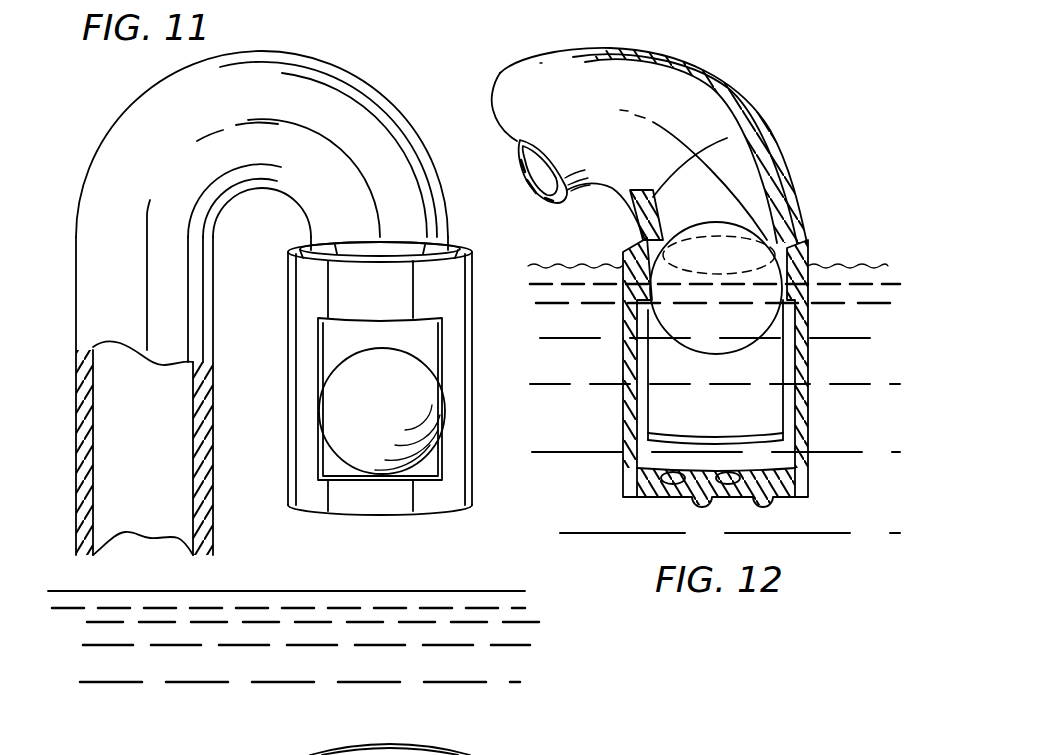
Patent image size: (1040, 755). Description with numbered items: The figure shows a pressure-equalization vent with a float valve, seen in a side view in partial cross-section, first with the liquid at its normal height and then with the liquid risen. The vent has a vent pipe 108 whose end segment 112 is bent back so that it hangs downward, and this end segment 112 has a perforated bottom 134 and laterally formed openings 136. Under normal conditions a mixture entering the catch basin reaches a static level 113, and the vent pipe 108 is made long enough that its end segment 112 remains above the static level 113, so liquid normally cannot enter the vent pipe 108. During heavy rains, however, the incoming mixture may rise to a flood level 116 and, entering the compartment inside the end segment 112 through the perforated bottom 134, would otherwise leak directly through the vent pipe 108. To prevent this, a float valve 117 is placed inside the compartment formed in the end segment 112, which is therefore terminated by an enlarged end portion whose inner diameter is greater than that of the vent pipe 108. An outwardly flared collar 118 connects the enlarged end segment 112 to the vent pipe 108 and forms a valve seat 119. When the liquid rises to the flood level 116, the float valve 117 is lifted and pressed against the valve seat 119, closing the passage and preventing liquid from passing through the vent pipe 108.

In FIG. 11, the vent pipe 108 is at (80, 197).
In FIG. 12, the vent pipe 108 is at (683, 110).
In FIG. 11, the end segment 112 is at (447, 505).
In FIG. 12, the end segment 112 is at (812, 407).
In FIG. 11, the static level 113 is at (40, 591).
In FIG. 12, the flood level 116 is at (685, 343).
In FIG. 12, the float valve 117 is at (575, 264).
In FIG. 12, the outwardly flared collar 118 is at (788, 250).
In FIG. 12, the valve seat 119 is at (652, 275).
In FIG. 12, the perforated bottom 134 is at (650, 496).
In FIG. 11, the laterally formed openings 136 is at (330, 356).
In FIG. 12, the laterally formed openings 136 is at (781, 397).